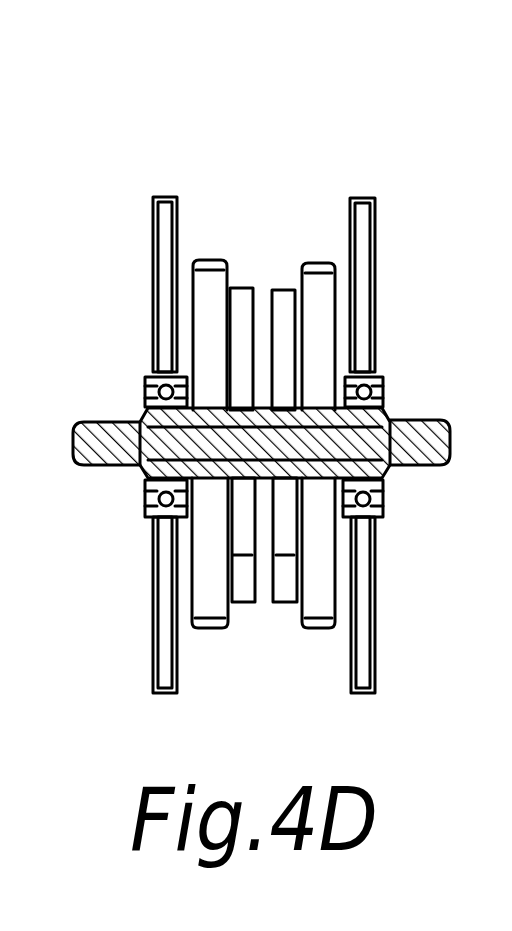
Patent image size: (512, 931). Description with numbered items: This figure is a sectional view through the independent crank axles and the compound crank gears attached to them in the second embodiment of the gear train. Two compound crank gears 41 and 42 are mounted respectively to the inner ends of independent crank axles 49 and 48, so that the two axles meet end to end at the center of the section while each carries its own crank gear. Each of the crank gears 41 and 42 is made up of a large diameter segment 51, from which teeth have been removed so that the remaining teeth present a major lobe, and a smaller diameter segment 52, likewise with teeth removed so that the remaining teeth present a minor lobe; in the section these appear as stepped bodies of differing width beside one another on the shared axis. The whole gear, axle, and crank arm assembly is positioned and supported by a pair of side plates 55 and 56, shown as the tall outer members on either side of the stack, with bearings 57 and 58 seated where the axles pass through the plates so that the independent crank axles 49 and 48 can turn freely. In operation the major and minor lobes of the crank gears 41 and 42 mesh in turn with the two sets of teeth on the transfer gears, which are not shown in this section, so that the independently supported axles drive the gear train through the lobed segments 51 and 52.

The compound crank gear 41 is at (322, 262).
The compound crank gear 42 is at (210, 258).
The independent crank axle 48 is at (107, 426).
The independent crank axle 49 is at (418, 425).
The large diameter segment 51 is at (210, 585).
The smaller diameter segment 52 is at (288, 603).
The side plate 55 is at (164, 233).
The side plate 56 is at (361, 237).
The bearing 57 is at (148, 378).
The bearing 58 is at (381, 380).